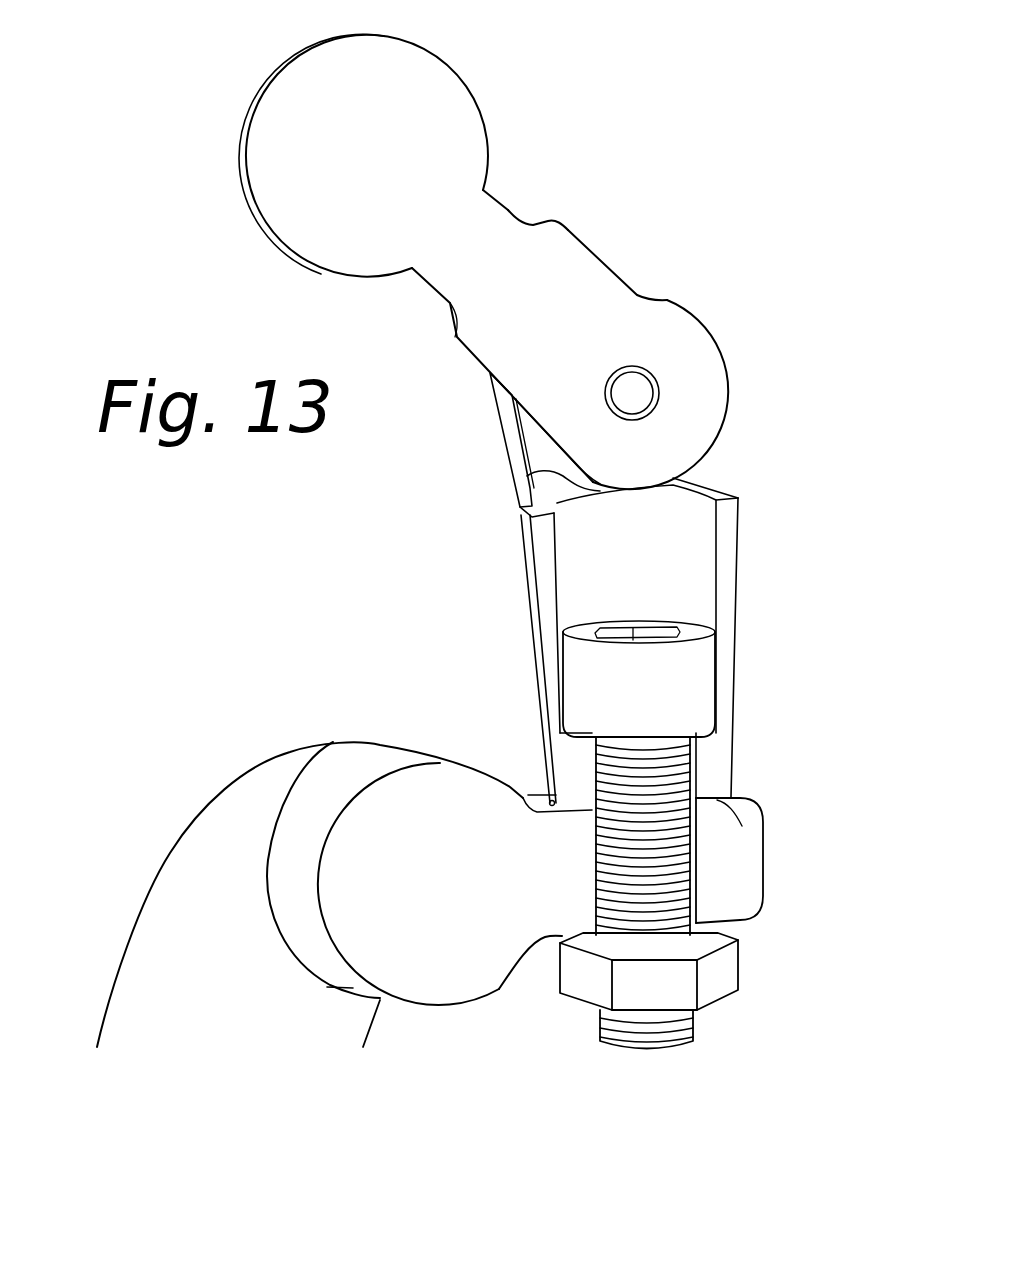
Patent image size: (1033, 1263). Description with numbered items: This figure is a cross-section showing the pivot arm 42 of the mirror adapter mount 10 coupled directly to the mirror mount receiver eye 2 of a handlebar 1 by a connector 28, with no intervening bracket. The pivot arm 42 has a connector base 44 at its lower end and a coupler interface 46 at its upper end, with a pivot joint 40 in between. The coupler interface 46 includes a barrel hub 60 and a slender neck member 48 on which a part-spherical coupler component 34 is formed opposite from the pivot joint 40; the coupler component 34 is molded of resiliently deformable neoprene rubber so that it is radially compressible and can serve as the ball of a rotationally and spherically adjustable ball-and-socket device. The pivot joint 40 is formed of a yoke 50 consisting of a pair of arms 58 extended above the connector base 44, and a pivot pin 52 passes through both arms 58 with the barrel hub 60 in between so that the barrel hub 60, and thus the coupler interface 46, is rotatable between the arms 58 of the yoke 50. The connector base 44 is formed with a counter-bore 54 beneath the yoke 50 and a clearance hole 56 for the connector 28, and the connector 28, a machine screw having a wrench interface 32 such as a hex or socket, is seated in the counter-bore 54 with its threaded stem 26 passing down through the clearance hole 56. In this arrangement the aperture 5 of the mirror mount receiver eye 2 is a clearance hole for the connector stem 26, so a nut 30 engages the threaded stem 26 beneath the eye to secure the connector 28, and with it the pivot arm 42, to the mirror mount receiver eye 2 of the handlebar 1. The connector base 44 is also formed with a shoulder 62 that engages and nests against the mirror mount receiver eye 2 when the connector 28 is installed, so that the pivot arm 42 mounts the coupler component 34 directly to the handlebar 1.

The handlebar 1 is at (230, 787).
The mirror mount receiver eye 2 is at (748, 920).
The aperture 5 is at (700, 890).
The mirror adapter mount 10 is at (408, 534).
The stem 26 is at (680, 1050).
The connector 28 is at (597, 1023).
The nut 30 is at (733, 990).
The wrench interface 32 is at (660, 701).
The part-spherical coupler component 34 is at (249, 115).
The pivot joint 40 is at (517, 428).
The pivot arm 42 is at (528, 647).
The connector base 44 is at (523, 558).
The coupler interface 46 is at (593, 251).
The neck member 48 is at (510, 210).
The yoke 50 is at (507, 467).
The pivot pin 52 is at (647, 393).
The counter-bore 54 is at (556, 564).
The clearance hole 56 is at (697, 762).
The arms 58 is at (490, 381).
The barrel hub 60 is at (690, 314).
The shoulder 62 is at (742, 826).